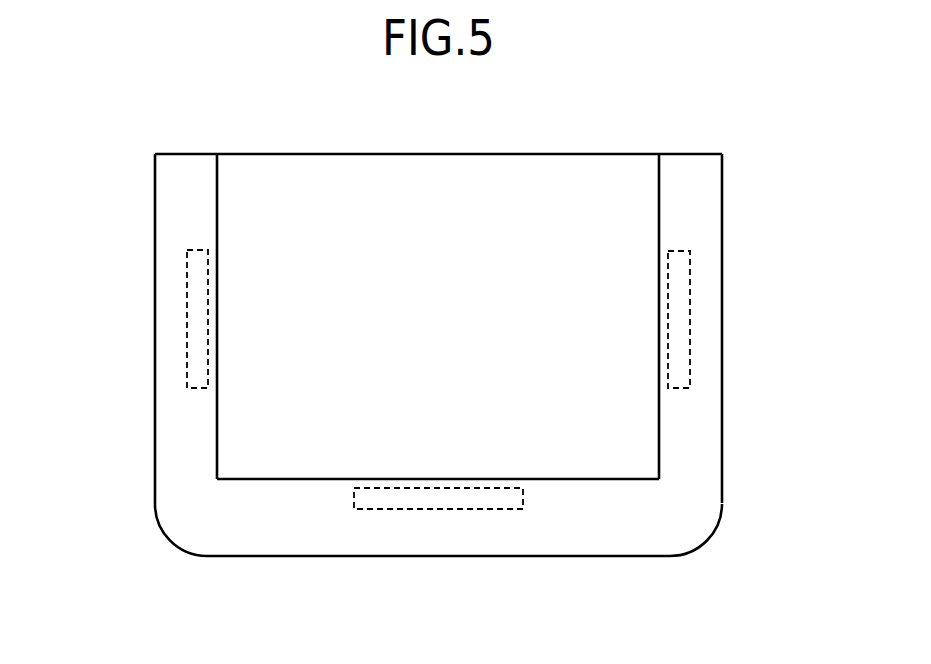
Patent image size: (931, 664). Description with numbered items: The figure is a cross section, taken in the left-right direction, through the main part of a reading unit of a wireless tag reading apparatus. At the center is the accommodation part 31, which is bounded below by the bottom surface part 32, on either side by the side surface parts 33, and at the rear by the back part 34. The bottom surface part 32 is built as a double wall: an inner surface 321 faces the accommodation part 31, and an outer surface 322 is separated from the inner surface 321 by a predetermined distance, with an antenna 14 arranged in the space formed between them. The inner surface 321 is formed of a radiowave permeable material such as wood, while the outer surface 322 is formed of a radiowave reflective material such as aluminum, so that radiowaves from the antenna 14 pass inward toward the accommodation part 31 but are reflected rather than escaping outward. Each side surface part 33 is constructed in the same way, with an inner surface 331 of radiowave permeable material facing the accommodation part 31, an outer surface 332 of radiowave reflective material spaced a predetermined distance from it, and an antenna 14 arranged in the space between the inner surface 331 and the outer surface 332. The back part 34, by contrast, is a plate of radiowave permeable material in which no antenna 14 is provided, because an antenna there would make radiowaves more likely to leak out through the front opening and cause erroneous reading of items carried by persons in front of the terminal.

The antenna 14 is at (113, 342).
The accommodation part 31 is at (396, 332).
The bottom surface part 32 is at (276, 528).
The side surface part 33 is at (178, 198).
The back part 34 is at (440, 190).
The inner surface 321 is at (582, 479).
The outer surface 322 is at (621, 556).
The inner surface 331 is at (218, 284).
The outer surface 332 is at (155, 425).